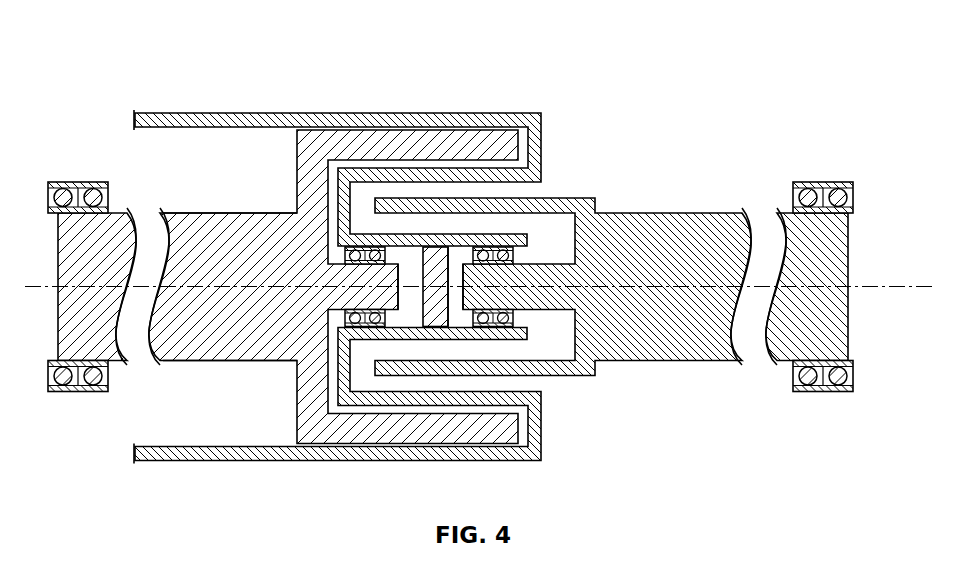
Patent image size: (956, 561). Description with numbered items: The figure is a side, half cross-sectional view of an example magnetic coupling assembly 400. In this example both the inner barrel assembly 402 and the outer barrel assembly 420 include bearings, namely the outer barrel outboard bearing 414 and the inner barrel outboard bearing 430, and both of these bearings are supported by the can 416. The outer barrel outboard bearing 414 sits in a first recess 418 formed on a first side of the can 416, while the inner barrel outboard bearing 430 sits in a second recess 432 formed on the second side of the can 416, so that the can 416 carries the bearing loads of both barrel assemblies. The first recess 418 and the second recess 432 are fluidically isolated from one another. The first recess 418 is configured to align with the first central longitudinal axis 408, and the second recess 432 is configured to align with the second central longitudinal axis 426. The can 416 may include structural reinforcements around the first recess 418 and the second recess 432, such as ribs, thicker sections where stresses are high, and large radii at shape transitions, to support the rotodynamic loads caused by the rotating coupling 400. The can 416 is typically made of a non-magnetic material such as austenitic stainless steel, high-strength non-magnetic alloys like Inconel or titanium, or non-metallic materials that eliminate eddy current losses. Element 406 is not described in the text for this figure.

The magnetic coupling assembly 400 is at (123, 79).
The inner barrel assembly 402 is at (253, 428).
The flanged shaft 406 is at (228, 345).
The first central longitudinal axis 408 is at (250, 280).
The outer barrel outboard bearing 414 is at (357, 325).
The can 416 is at (440, 313).
The first recess 418 is at (412, 258).
The outer barrel assembly 420 is at (592, 415).
The second central longitudinal axis 426 is at (767, 280).
The inner barrel outboard bearing 430 is at (502, 262).
The second recess 432 is at (462, 317).